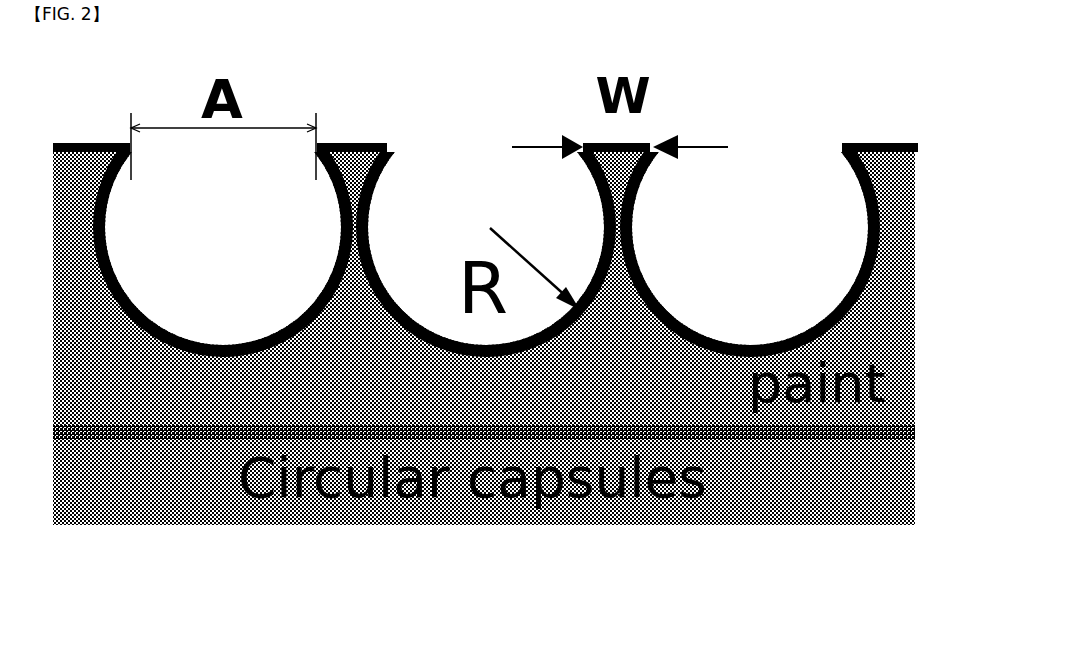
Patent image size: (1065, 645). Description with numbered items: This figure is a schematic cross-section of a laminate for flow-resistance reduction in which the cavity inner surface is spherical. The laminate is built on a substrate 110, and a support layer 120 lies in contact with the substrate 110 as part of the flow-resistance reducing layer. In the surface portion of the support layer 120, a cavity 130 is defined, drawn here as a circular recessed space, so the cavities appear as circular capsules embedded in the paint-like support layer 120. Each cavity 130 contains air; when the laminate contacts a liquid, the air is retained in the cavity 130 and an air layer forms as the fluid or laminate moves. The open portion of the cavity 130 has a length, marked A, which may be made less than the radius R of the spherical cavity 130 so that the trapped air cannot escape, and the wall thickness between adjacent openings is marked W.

The substrate 110 is at (768, 508).
The support layer 120 is at (123, 380).
The cavity 130 is at (715, 300).